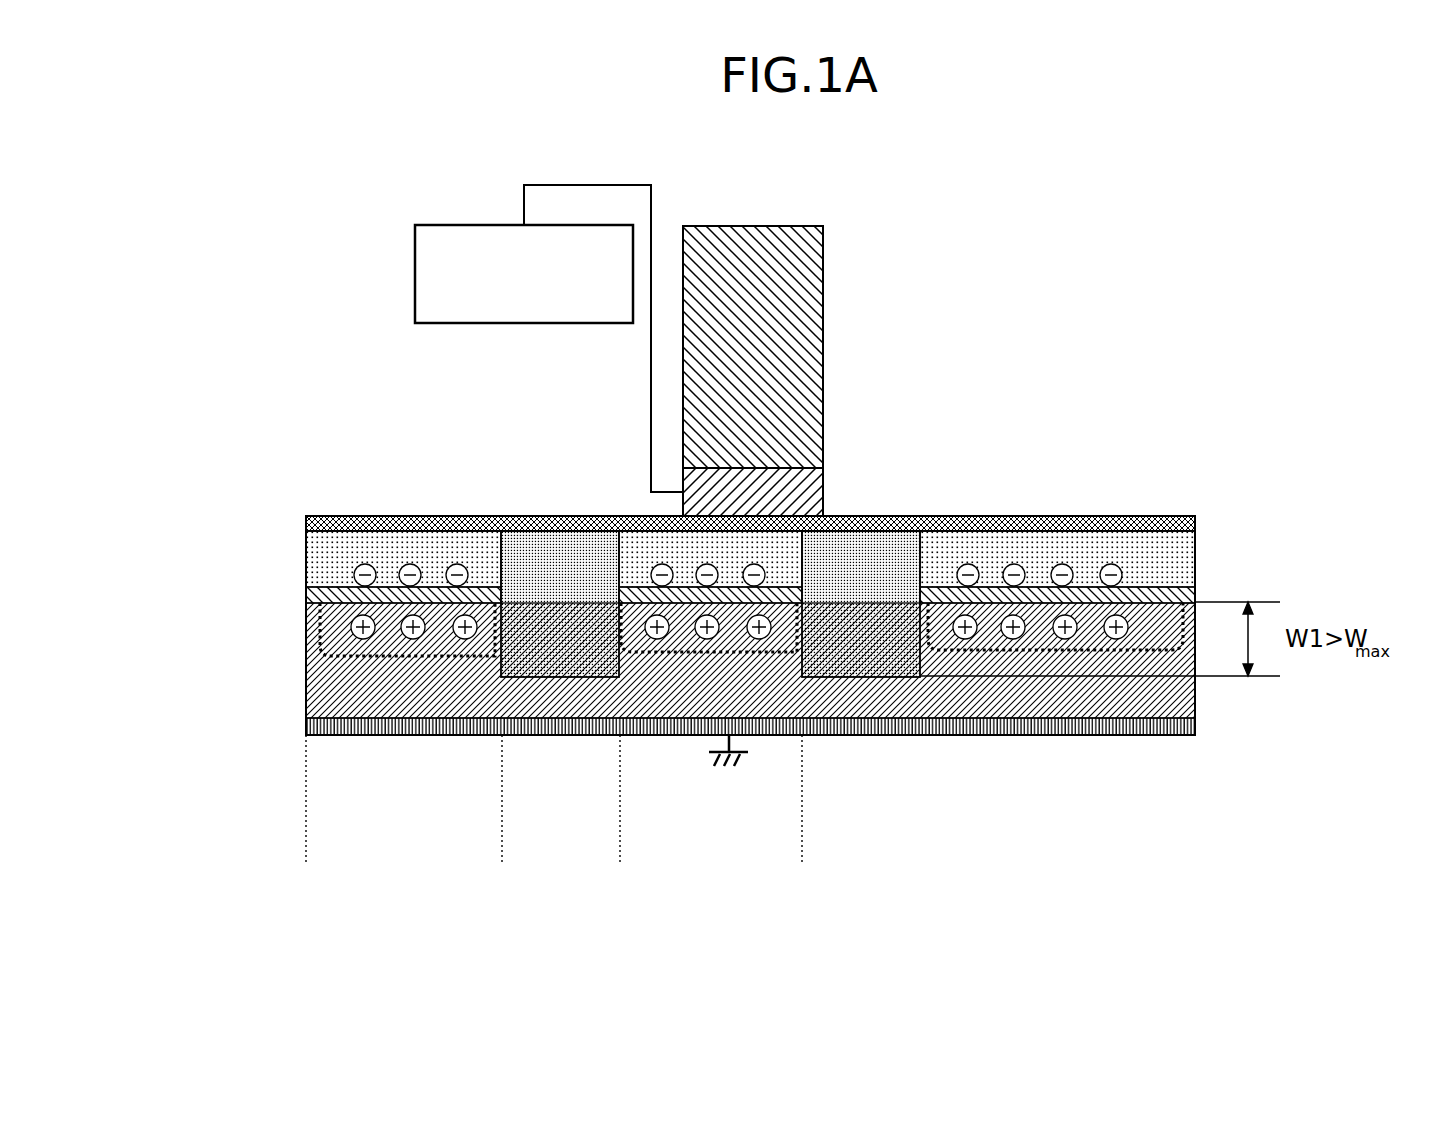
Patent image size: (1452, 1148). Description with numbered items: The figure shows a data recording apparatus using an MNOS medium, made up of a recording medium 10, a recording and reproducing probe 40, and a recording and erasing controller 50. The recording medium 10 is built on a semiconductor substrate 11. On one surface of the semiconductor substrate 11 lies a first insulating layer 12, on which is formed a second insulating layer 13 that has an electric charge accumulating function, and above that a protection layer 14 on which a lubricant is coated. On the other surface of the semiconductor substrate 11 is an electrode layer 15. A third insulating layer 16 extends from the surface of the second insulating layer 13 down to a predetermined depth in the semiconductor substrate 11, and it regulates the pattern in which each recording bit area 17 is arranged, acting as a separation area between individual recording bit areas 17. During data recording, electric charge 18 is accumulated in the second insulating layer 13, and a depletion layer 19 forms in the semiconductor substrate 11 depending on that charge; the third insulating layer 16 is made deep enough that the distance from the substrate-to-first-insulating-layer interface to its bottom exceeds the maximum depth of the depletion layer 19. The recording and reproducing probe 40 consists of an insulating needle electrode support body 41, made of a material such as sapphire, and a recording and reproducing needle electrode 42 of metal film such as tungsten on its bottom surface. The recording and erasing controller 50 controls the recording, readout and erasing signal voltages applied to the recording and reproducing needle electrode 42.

The recording medium 10 is at (275, 660).
The semiconductor substrate 11 is at (1195, 695).
The first insulating layer 12 is at (1195, 592).
The second insulating layer 13 is at (1190, 545).
The protection layer 14 is at (1068, 520).
The electrode layer 15 is at (1195, 730).
The third insulating layer 16 is at (543, 550).
The recording bit area 17 is at (306, 865).
The electric charge 18 is at (660, 566).
The depletion layer 19 is at (766, 655).
The recording and reproducing probe 40 is at (757, 208).
The needle electrode support body 41 is at (823, 255).
The recording and reproducing needle electrode 42 is at (823, 492).
The recording and erasing controller 50 is at (413, 275).